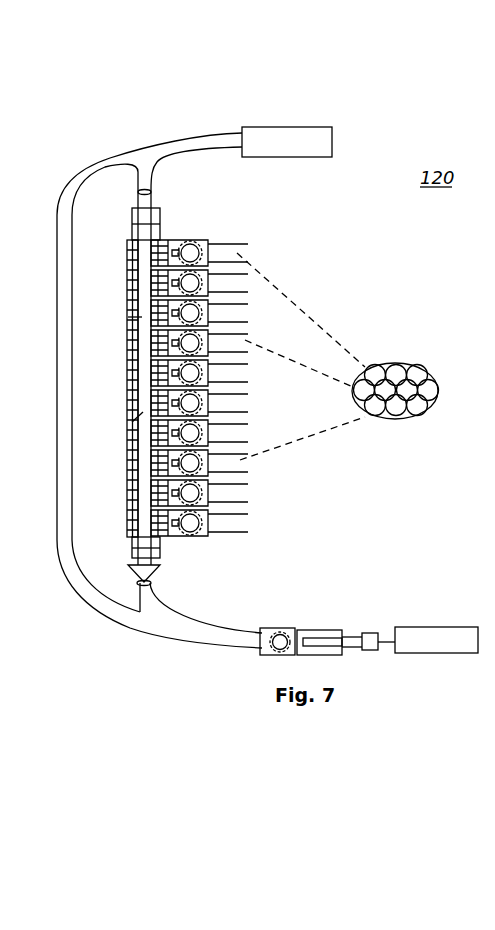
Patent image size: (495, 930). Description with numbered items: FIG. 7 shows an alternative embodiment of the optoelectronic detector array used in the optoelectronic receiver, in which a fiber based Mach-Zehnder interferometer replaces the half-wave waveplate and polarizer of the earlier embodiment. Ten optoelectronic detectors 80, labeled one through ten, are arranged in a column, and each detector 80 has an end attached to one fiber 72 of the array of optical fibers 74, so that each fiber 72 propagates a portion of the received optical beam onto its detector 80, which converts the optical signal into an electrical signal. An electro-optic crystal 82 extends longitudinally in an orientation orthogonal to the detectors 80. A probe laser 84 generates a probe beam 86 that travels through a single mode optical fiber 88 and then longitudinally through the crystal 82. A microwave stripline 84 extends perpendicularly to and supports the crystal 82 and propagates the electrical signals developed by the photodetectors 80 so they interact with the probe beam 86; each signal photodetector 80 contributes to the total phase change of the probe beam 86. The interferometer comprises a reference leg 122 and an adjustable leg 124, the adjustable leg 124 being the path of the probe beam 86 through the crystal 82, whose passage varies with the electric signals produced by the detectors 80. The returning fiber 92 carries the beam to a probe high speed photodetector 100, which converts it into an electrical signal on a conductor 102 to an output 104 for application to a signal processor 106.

The optical fiber 72 is at (245, 252).
The array of optical fibers 74 is at (417, 415).
The optoelectronic detector 80 is at (186, 243).
The electro-optic crystal 82 is at (162, 209).
The probe laser 84 is at (243, 128).
The probe beam 86 is at (153, 197).
The single mode optical fiber 88 is at (137, 149).
The return fiber 92 is at (203, 625).
The probe high speed photodetector 100 is at (283, 633).
The conductor 102 is at (350, 634).
The output 104 is at (379, 634).
The signal processor 106 is at (450, 627).
The reference leg 122 is at (128, 317).
The adjustable leg 124 is at (132, 422).